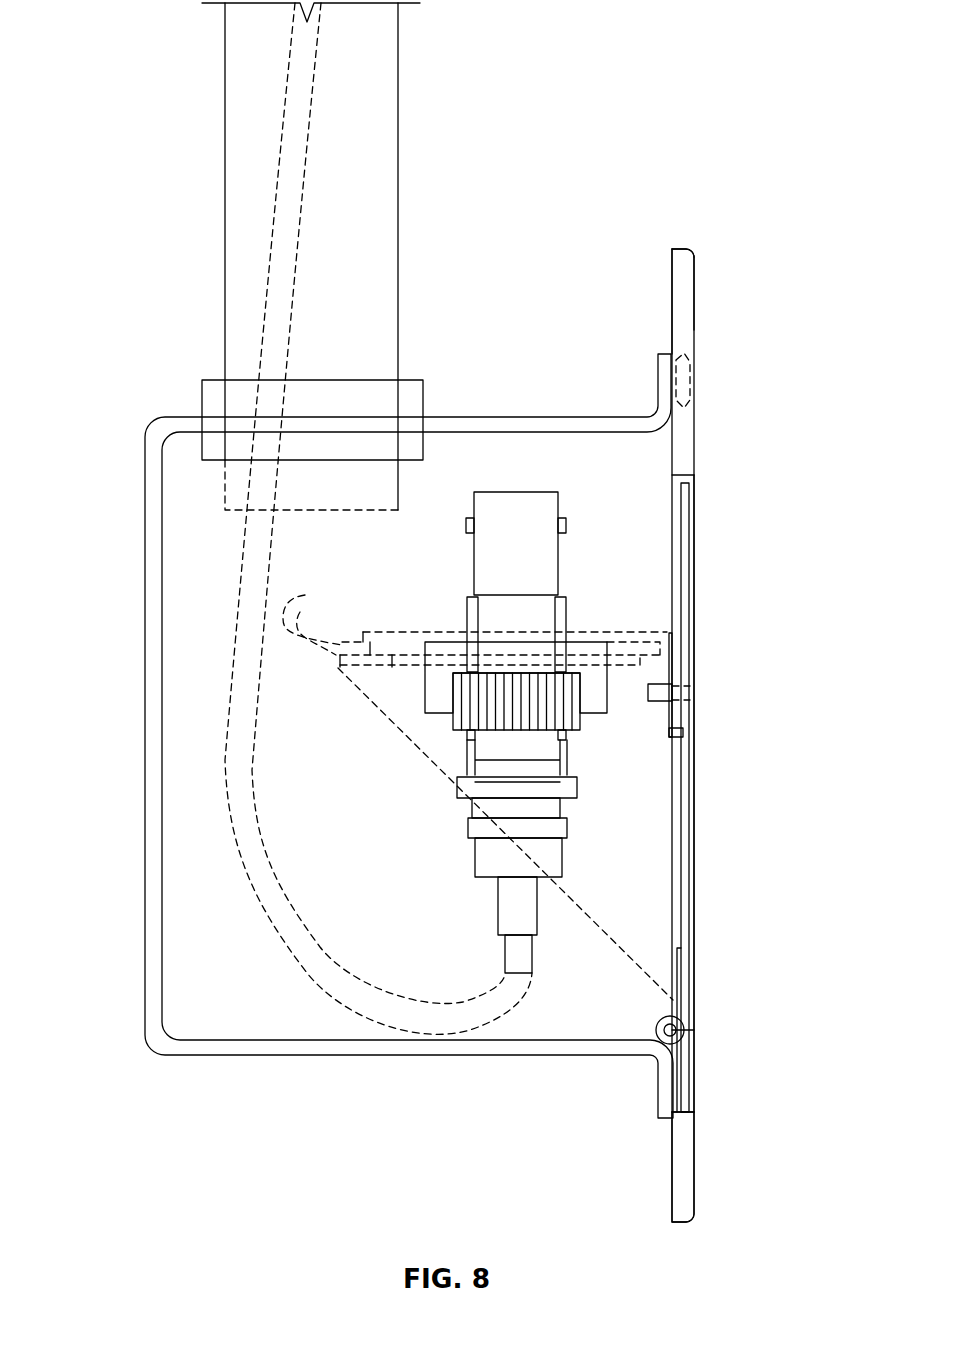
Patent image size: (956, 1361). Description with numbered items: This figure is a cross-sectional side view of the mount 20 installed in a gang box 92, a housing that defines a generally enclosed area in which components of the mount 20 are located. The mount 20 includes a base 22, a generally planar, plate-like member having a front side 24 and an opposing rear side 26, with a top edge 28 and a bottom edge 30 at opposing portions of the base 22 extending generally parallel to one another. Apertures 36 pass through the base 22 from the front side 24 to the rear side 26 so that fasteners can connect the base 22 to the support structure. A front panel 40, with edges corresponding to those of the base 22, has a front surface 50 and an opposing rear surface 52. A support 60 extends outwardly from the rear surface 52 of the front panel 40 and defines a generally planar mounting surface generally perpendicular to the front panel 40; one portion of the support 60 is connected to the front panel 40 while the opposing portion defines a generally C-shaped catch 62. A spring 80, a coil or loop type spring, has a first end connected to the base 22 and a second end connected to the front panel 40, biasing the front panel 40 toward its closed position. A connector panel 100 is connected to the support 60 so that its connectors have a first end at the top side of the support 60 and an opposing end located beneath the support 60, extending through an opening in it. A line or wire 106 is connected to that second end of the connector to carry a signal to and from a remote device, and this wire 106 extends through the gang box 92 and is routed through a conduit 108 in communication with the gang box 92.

The mount 20 is at (729, 235).
The base 22 is at (687, 318).
The front side 24 is at (697, 296).
The rear side 26 is at (669, 309).
The top edge 28 is at (678, 250).
The bottom edge 30 is at (688, 1222).
The apertures 36 is at (700, 1112).
The front panel 40 is at (695, 783).
The front surface 50 is at (694, 755).
The rear surface 52 is at (668, 770).
The support 60 is at (388, 648).
The catch 62 is at (310, 594).
The spring 80 is at (656, 1028).
The gang box 92 is at (145, 722).
The connector panel 100 is at (612, 622).
The line or wire 106 is at (322, 944).
The conduit 108 is at (398, 160).